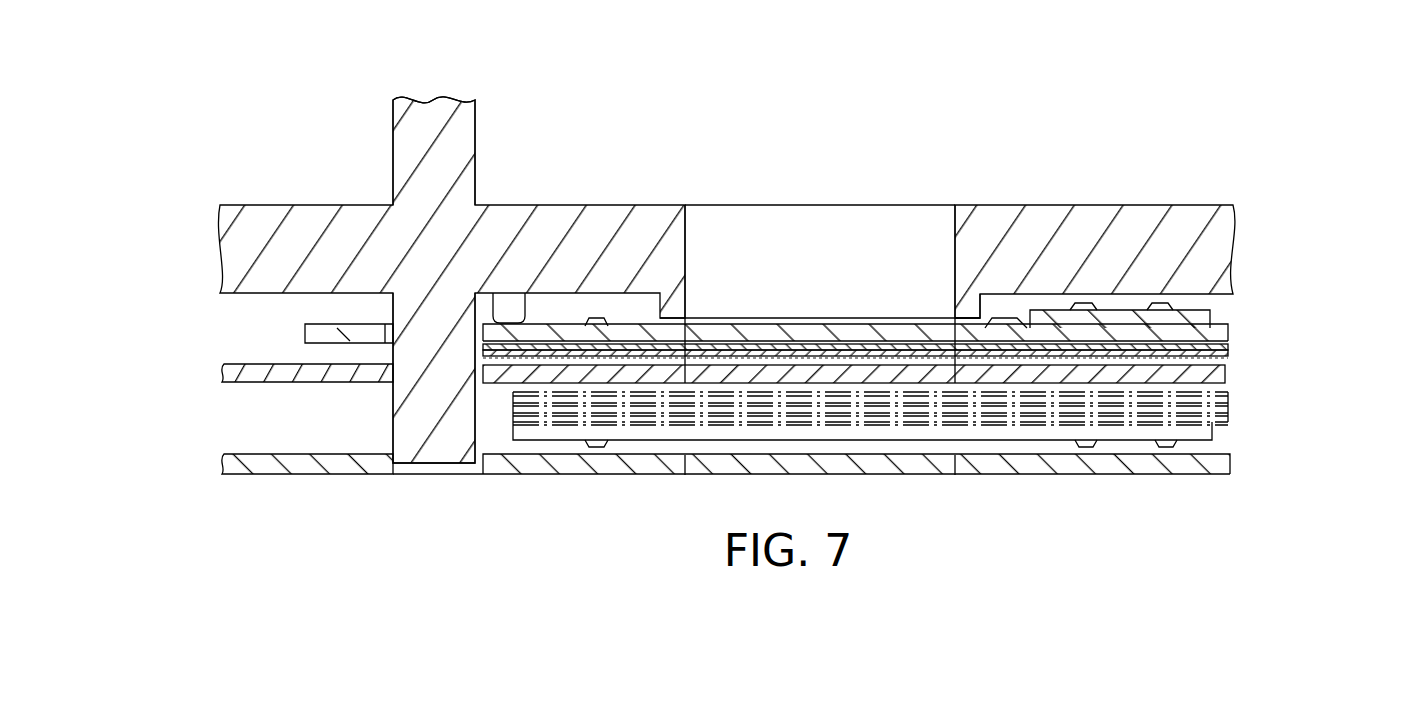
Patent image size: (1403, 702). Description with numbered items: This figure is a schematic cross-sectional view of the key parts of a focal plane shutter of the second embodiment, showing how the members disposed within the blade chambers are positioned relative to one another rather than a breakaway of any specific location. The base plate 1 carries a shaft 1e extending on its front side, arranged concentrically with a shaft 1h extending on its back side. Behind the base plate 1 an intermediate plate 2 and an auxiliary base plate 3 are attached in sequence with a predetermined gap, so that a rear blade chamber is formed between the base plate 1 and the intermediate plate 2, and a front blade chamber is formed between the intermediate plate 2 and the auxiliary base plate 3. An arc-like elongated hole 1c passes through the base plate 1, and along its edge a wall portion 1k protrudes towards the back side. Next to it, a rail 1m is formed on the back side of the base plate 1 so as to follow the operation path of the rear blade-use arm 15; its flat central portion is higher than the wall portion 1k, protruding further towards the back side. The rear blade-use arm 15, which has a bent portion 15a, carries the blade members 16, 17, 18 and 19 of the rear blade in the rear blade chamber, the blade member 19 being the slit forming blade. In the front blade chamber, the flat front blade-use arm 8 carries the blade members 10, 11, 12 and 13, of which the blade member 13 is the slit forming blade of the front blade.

The base plate 1 is at (1142, 217).
The elongated hole 1c is at (835, 214).
The shaft 1e is at (428, 126).
The shaft 1h is at (438, 445).
The wall portion 1k is at (995, 293).
The rail 1m is at (513, 310).
The intermediate plate 2 is at (1232, 386).
The auxiliary base plate 3 is at (1087, 462).
The front blade-use arm 8 is at (1182, 478).
The blade member 10 is at (1230, 395).
The blade member 11 is at (1230, 403).
The blade member 12 is at (1230, 413).
The blade member 13 is at (1230, 423).
The rear blade-use arm 15 is at (1212, 305).
The bent portion 15a is at (1050, 305).
The blade member 16 is at (1226, 376).
The blade member 17 is at (1230, 354).
The blade member 18 is at (1230, 343).
The blade member 19 is at (1230, 327).